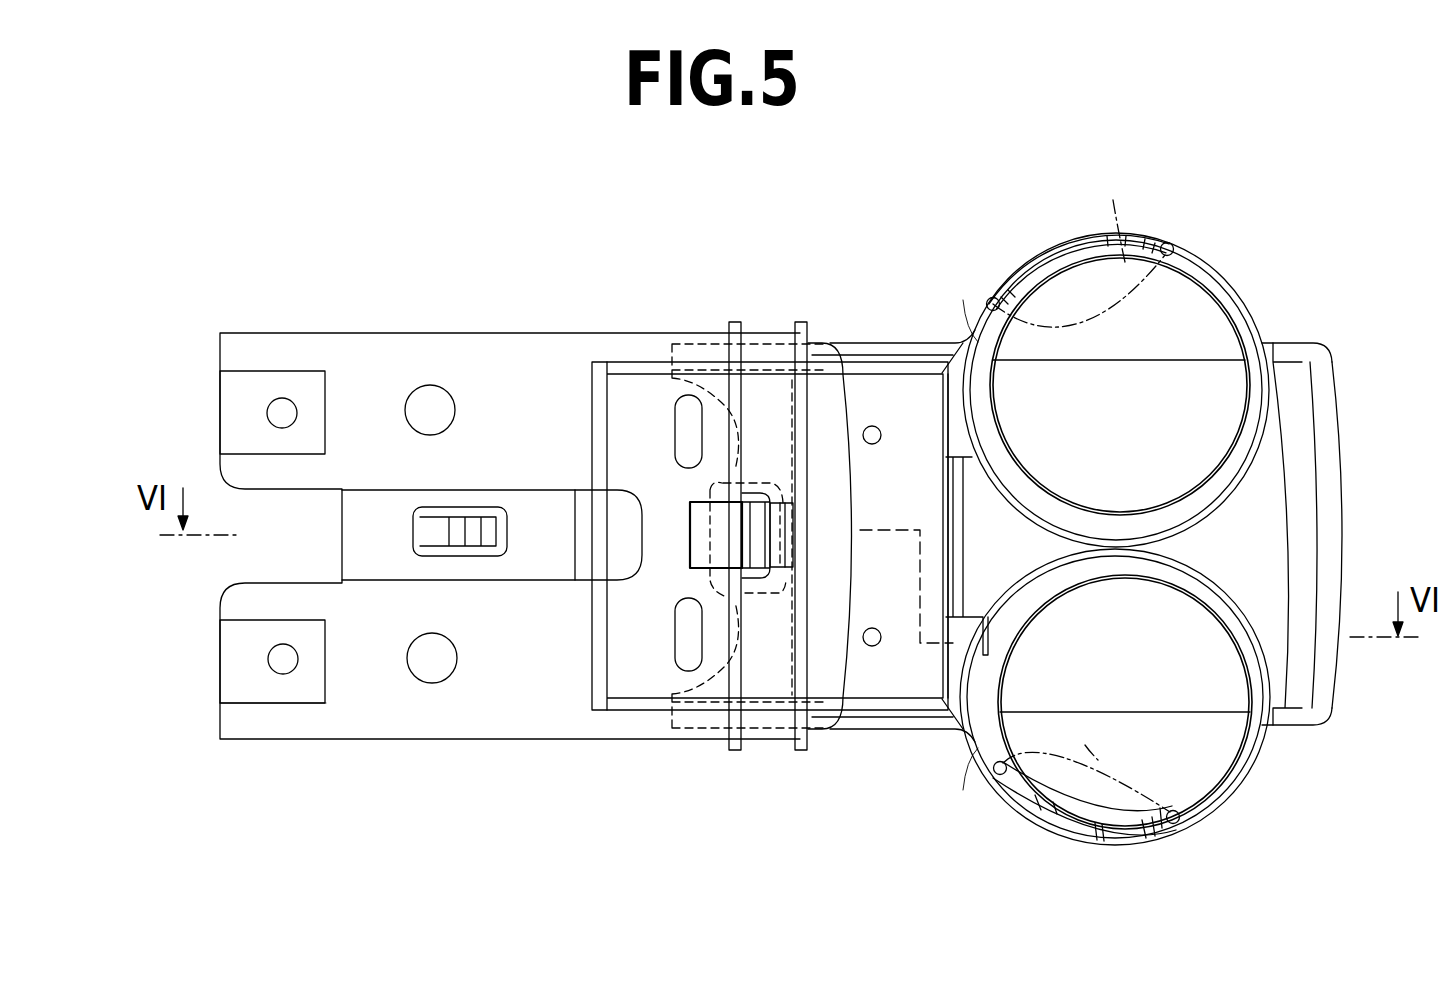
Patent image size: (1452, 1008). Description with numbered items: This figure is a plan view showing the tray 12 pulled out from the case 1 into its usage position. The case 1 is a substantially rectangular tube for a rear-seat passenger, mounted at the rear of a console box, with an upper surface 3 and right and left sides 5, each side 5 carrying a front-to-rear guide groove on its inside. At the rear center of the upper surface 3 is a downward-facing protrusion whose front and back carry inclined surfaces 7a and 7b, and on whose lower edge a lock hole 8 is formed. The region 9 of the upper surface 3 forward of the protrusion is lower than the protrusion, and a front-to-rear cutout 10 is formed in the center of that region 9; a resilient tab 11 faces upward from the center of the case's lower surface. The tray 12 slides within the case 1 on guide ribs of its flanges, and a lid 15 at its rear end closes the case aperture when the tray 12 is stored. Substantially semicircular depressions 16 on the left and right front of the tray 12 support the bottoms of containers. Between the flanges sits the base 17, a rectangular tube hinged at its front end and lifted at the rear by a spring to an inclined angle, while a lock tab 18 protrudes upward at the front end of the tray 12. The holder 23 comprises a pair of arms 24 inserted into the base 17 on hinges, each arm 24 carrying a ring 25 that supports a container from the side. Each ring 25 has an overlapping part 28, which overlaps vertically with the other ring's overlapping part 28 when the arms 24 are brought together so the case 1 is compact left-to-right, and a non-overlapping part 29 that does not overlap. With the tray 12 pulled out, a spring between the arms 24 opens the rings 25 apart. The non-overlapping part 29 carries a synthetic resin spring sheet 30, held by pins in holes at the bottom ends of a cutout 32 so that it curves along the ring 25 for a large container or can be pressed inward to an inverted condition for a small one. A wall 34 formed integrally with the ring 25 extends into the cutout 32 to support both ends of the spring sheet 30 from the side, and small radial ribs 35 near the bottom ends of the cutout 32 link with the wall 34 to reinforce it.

The case 1 is at (362, 330).
The upper surface 3 is at (648, 712).
The sides 5 is at (660, 333).
The inclined surface 7a is at (692, 518).
The inclined surface 7b is at (782, 512).
The lock hole 8 is at (748, 492).
The region 9 is at (475, 703).
The cutout 10 is at (285, 490).
The resilient tab 11 is at (493, 548).
The tray 12 is at (1363, 490).
The lid 15 is at (1342, 585).
The depressions 16 is at (1242, 362).
The base 17 is at (890, 690).
The lock tab 18 is at (757, 546).
The holder 23 is at (1240, 240).
The arm 24 is at (955, 350).
The ring 25 is at (1305, 378).
The overlapping part 28 is at (1127, 515).
The non-overlapping part 29 is at (975, 335).
The spring sheet 30 is at (1105, 235).
The cutout 32 is at (1045, 230).
The wall 34 is at (993, 297).
The ribs 35 is at (1060, 312).